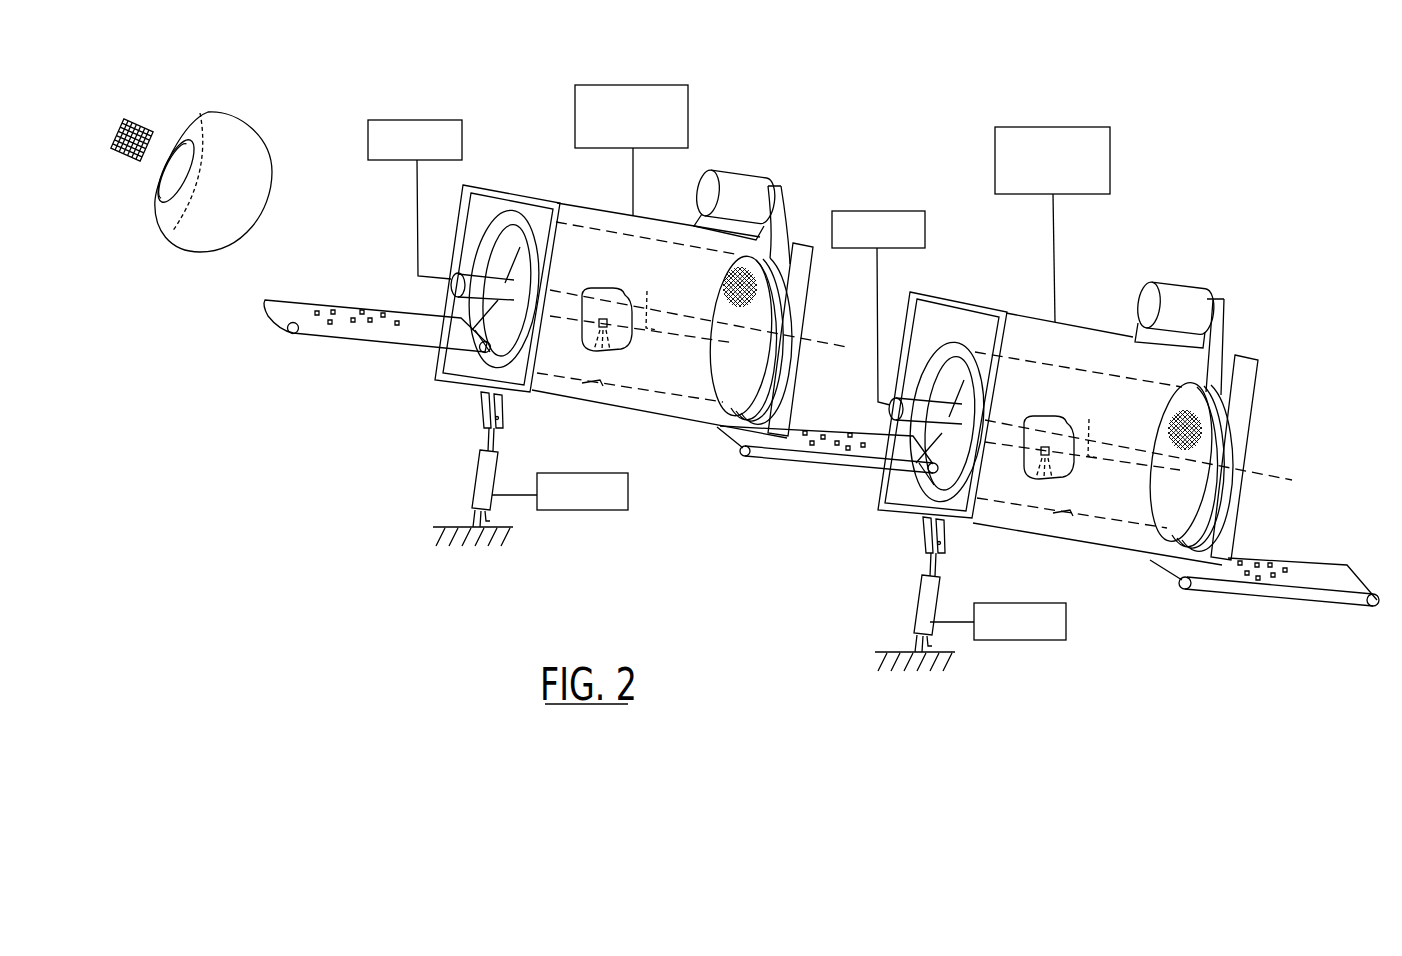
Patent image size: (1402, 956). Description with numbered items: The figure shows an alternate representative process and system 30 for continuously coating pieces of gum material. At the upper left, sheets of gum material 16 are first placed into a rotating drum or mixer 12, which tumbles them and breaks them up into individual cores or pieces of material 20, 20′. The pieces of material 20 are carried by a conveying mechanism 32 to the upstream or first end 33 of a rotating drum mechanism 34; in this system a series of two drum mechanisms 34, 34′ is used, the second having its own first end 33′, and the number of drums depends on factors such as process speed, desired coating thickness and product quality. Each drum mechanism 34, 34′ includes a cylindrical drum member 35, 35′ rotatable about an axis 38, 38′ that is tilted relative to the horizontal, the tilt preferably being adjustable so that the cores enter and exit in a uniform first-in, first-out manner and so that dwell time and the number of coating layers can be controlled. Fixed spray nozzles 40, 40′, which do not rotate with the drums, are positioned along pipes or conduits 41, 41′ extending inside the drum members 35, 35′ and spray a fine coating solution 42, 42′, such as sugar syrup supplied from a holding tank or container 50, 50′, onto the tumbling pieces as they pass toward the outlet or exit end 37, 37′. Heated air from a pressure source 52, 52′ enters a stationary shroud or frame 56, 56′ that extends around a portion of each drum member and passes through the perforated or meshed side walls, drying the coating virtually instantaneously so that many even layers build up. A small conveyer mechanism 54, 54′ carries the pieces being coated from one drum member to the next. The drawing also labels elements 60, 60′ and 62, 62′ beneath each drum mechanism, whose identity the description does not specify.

The rotating drum or mixer 12 is at (247, 128).
The sheets of gum material 16 is at (147, 118).
The individual pieces of material 20 is at (364, 310).
The sugar particles (second stage) 20′ is at (1270, 565).
The process and system 30 is at (330, 538).
The conveying mechanism 32 is at (350, 338).
The upstream or first end 33 is at (462, 375).
The upstream or first end 33′ is at (923, 500).
The rotating drum mechanism 34 is at (667, 420).
The rotating drum mechanism 34′ is at (1098, 552).
The cylindrical drum member 35 is at (582, 383).
The cylindrical drum member 35′ is at (1053, 513).
The outlet or exit end 37 is at (793, 398).
The outlet or exit end 37′ is at (1260, 365).
The axis 38 is at (820, 345).
The drum axis (second stage) 38′ is at (1265, 477).
The spray nozzles 40 is at (608, 320).
The spray nozzles 40′ is at (1049, 450).
The pipes or conduits 41 is at (517, 283).
The pipes or conduits 41′ is at (957, 415).
The coating solution 42 is at (605, 339).
The coating solution 42′ is at (1047, 468).
The holding tank or container 50 is at (418, 120).
The holding tank or container 50′ is at (877, 210).
The pressure source 52 is at (688, 105).
The pressure source 52′ is at (1073, 127).
The small conveyer mechanism 54 is at (832, 470).
The outfeed conveyor 54′ is at (1313, 597).
The stationary shroud or frame 56 is at (527, 197).
The stationary shroud or frame 56′ is at (993, 303).
The tilt actuator 60 is at (478, 458).
The tilt actuator (second stage) 60′ is at (915, 590).
The motor 62 is at (580, 511).
The motor (second stage) 62′ is at (1038, 640).